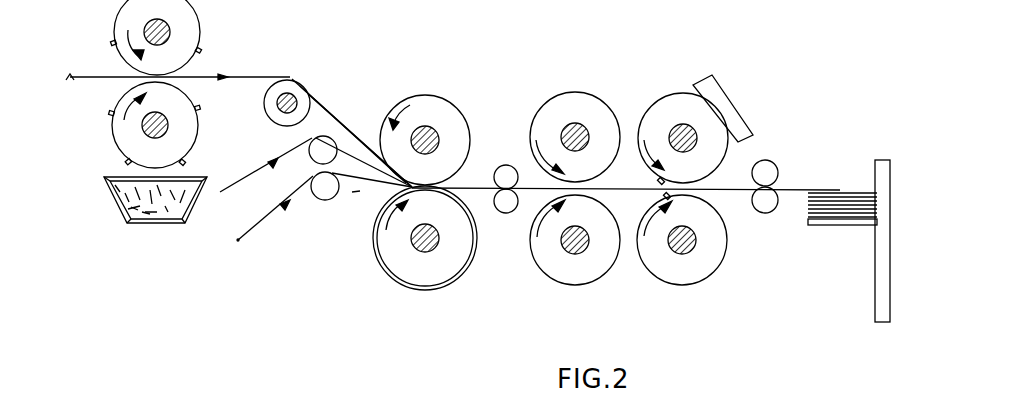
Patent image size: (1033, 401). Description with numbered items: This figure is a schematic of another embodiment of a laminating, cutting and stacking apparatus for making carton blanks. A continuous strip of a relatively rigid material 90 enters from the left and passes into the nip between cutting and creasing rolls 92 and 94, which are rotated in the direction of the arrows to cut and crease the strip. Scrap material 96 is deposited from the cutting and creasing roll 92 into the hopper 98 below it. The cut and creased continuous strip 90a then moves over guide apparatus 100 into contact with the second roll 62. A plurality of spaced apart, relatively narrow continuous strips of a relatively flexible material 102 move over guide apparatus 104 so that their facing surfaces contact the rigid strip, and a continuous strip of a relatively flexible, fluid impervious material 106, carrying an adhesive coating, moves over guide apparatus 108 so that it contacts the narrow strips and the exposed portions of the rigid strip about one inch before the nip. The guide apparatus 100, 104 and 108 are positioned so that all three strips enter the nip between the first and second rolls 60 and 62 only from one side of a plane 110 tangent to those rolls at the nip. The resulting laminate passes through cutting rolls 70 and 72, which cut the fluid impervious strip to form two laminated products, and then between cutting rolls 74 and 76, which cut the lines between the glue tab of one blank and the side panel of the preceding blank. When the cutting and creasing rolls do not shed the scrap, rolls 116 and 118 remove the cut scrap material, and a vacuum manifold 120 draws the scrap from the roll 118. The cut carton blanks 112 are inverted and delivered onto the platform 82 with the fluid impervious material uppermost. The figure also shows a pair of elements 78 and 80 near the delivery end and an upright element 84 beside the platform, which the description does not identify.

The continuous strip of a relatively rigid material 90 is at (90, 75).
The cut and creased continuous strip 90a is at (336, 117).
The cutting and creasing roll 92 is at (113, 136).
The cutting and creasing roll 94 is at (194, 22).
The scrap material 96 is at (185, 190).
The hopper 98 is at (112, 197).
The guide apparatus 100 is at (264, 103).
The plurality of spaced apart, relatively narrow continuous strips of a relatively f 102 is at (233, 188).
The guide apparatus 104 is at (312, 158).
The continuous strip of a relatively flexible, fluid impervious material 106 is at (250, 234).
The guide apparatus 108 is at (325, 200).
The plane tangent to the first and second rolls at the nip 110 is at (386, 190).
The second roll 62 is at (450, 108).
The first roll 60 is at (440, 270).
The cutting roll 72 is at (506, 165).
The cutting roll 70 is at (506, 213).
The cutting roll 76 is at (618, 101).
The cutting roll 74 is at (573, 272).
The roll 118 is at (668, 103).
The roll 116 is at (700, 272).
The vacuum manifold 120 is at (742, 101).
The roller 80 is at (767, 160).
The roller 78 is at (767, 214).
The carton blanks 112 is at (843, 192).
The platform 82 is at (843, 228).
The wall 84 is at (875, 300).